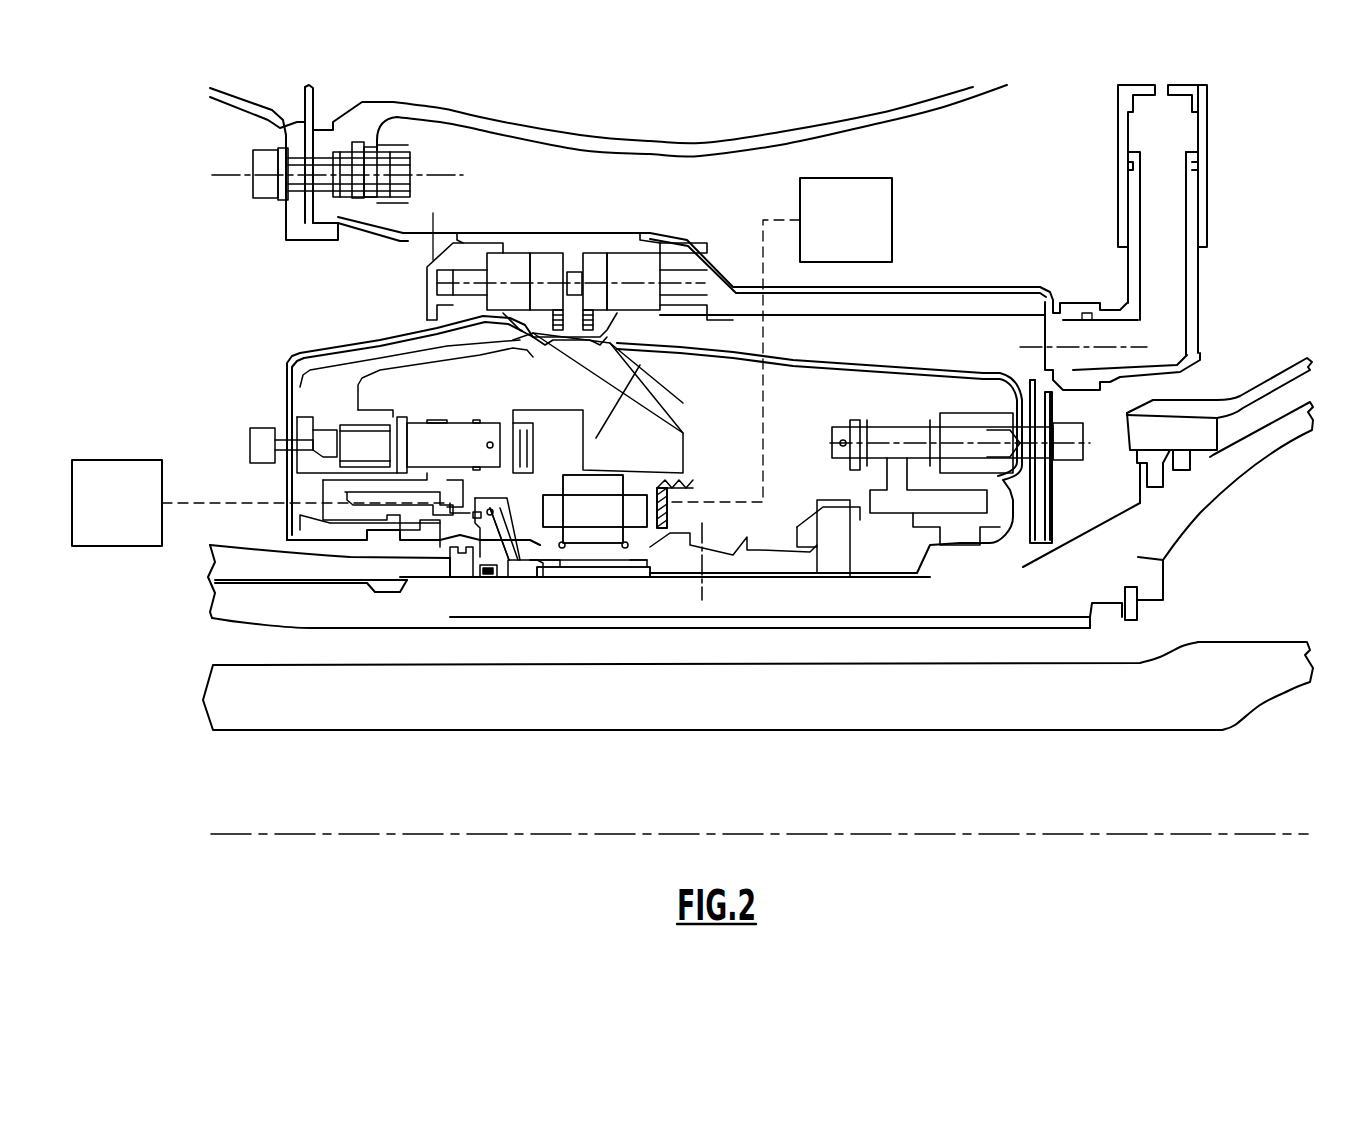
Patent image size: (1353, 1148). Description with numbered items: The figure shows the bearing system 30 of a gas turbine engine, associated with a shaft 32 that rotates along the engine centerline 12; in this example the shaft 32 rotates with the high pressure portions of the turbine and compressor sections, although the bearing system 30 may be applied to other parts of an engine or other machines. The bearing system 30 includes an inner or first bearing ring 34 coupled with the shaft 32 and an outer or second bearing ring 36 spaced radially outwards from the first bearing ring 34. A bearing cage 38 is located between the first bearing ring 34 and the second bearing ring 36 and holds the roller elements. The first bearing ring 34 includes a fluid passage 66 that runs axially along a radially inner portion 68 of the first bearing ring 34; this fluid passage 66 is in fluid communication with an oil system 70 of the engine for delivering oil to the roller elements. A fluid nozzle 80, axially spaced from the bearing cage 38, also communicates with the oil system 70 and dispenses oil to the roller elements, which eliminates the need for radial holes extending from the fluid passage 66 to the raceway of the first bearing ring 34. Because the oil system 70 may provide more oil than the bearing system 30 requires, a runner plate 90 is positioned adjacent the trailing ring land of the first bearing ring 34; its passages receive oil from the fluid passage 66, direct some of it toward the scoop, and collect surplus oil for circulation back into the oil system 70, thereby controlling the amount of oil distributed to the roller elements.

The engine centerline 12 is at (1175, 834).
The bearing system 30 is at (705, 490).
The shaft 32 is at (1163, 560).
The first bearing ring 34 is at (618, 562).
The second bearing ring 36 is at (580, 450).
The bearing cage 38 is at (543, 500).
The fluid passage 66 is at (602, 572).
The radially inner portion 68 is at (578, 580).
The oil system 70 is at (892, 208).
The fluid nozzle 80 is at (667, 513).
The runner plate 90 is at (488, 557).